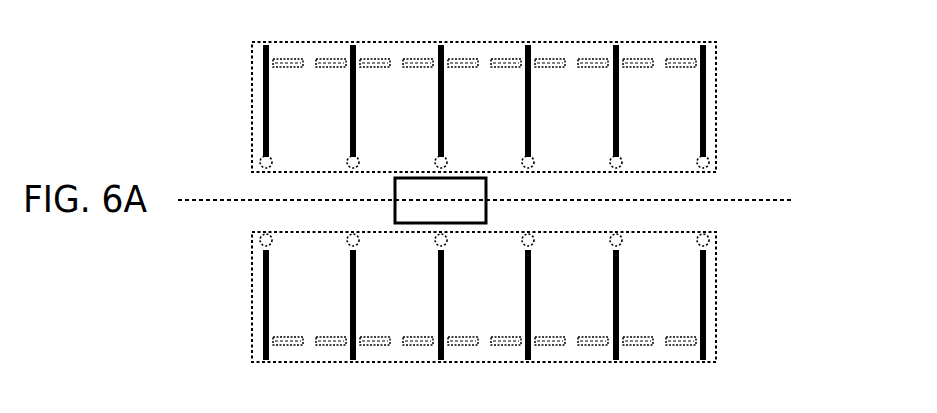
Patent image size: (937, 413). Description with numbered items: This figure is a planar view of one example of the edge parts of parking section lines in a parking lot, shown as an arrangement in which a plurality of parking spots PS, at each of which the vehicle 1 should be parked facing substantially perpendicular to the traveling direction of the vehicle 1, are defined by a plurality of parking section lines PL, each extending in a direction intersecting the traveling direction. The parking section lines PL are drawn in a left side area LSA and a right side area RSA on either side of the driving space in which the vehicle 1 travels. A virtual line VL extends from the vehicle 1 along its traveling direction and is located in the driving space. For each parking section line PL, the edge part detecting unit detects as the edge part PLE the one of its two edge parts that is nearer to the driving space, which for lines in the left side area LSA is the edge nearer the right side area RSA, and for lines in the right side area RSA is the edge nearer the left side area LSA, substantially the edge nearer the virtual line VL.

The parking section line PL is at (738, 382).
The edge part PLE is at (271, 158).
The parking spot PS is at (292, 86).
The left side area LSA is at (716, 68).
The right side area RSA is at (716, 302).
The virtual line VL is at (763, 199).
The vehicle 1 is at (440, 200).